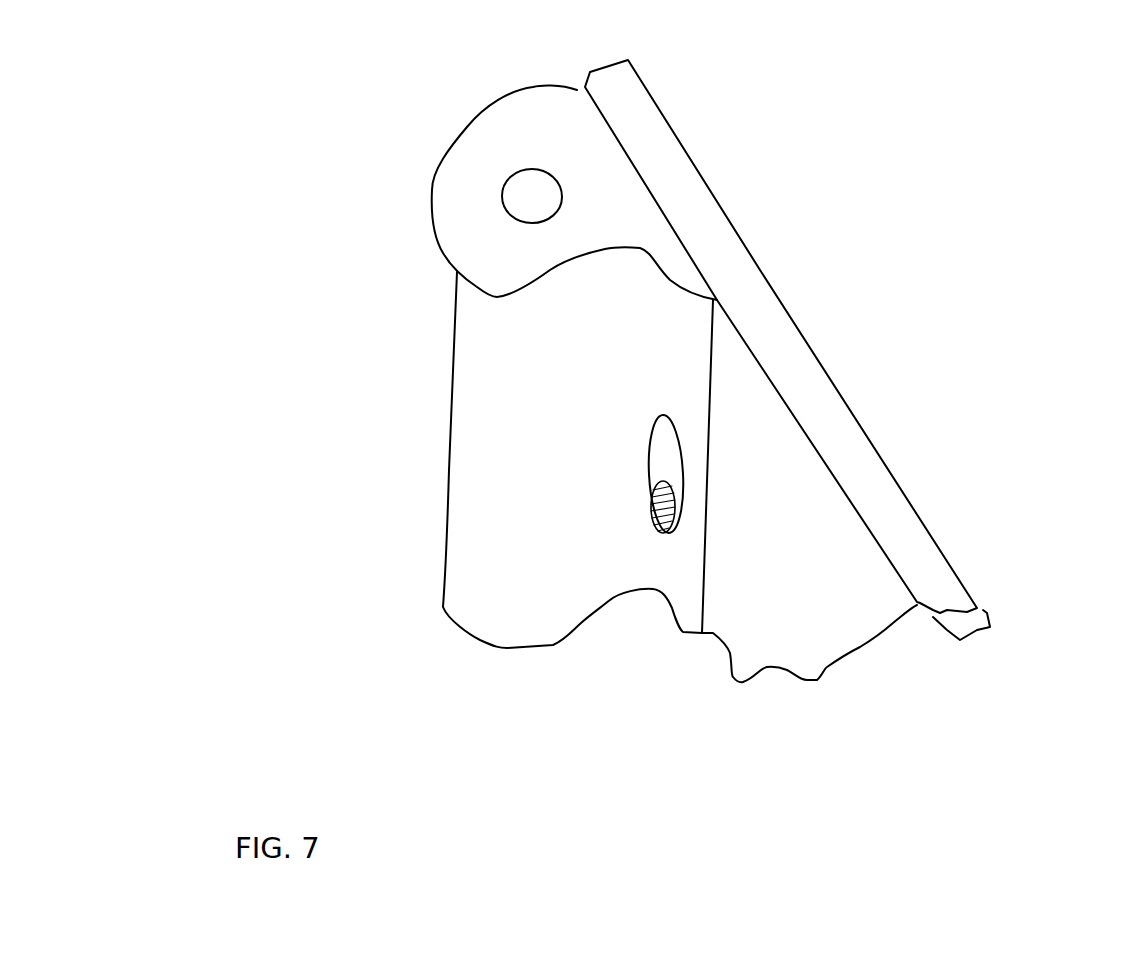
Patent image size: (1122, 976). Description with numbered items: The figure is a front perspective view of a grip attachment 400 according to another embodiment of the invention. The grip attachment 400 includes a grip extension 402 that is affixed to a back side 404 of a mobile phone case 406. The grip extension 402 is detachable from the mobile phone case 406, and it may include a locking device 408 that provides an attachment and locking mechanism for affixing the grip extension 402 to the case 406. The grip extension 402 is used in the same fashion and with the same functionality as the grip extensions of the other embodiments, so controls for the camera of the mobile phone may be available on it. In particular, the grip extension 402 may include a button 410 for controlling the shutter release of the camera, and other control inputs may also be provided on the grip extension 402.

The grip attachment 400 is at (343, 250).
The grip extension 402 is at (472, 418).
The back side 404 is at (789, 539).
The mobile phone case 406 is at (830, 435).
The locking device 408 is at (629, 465).
The button 410 is at (517, 190).